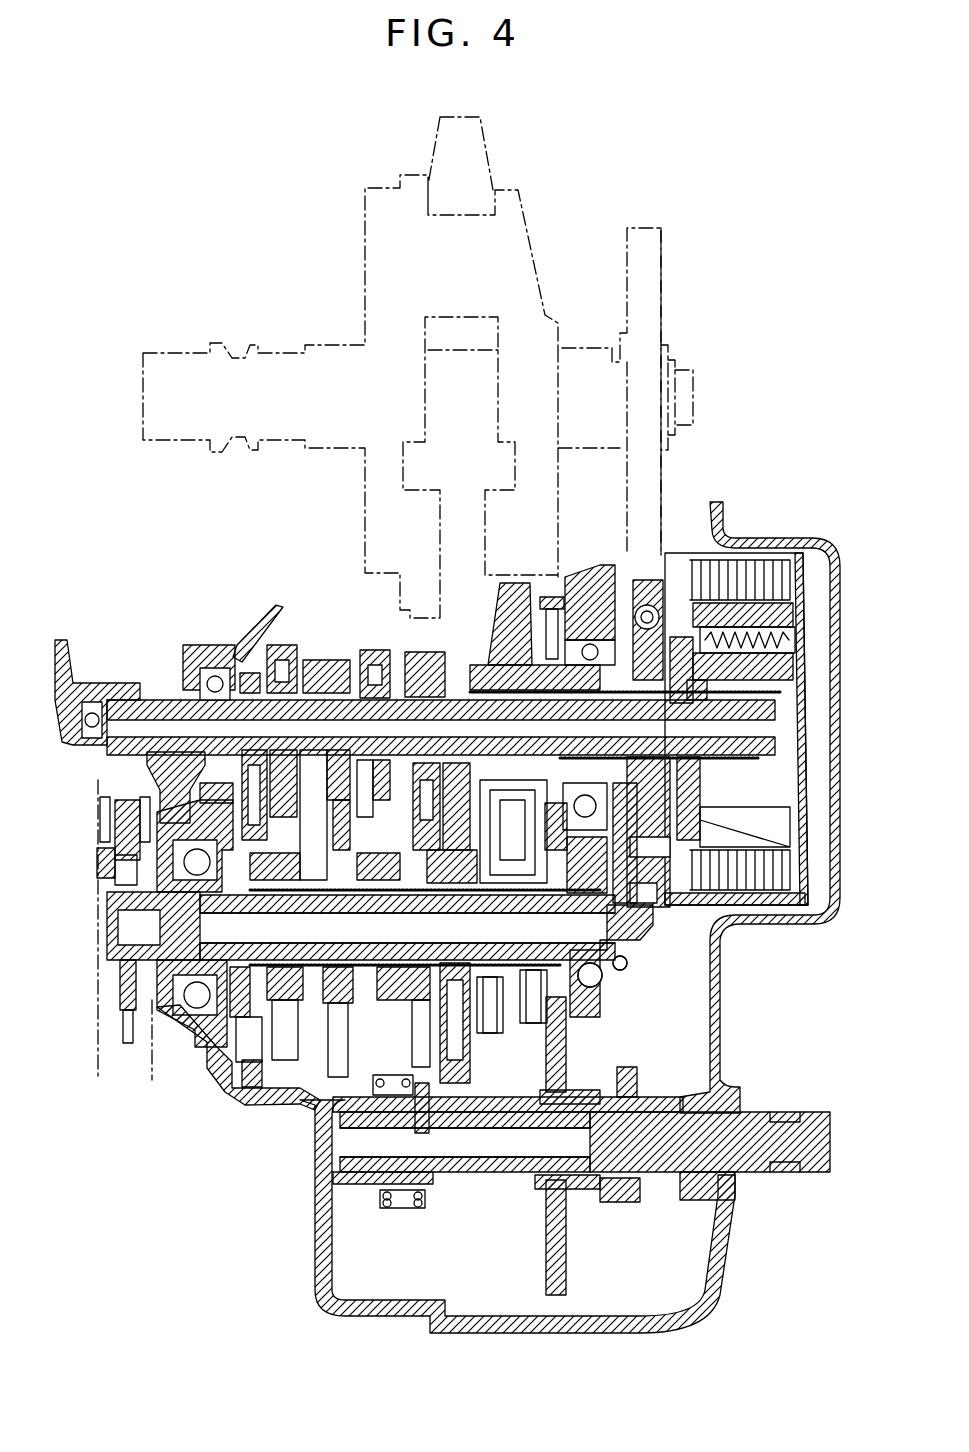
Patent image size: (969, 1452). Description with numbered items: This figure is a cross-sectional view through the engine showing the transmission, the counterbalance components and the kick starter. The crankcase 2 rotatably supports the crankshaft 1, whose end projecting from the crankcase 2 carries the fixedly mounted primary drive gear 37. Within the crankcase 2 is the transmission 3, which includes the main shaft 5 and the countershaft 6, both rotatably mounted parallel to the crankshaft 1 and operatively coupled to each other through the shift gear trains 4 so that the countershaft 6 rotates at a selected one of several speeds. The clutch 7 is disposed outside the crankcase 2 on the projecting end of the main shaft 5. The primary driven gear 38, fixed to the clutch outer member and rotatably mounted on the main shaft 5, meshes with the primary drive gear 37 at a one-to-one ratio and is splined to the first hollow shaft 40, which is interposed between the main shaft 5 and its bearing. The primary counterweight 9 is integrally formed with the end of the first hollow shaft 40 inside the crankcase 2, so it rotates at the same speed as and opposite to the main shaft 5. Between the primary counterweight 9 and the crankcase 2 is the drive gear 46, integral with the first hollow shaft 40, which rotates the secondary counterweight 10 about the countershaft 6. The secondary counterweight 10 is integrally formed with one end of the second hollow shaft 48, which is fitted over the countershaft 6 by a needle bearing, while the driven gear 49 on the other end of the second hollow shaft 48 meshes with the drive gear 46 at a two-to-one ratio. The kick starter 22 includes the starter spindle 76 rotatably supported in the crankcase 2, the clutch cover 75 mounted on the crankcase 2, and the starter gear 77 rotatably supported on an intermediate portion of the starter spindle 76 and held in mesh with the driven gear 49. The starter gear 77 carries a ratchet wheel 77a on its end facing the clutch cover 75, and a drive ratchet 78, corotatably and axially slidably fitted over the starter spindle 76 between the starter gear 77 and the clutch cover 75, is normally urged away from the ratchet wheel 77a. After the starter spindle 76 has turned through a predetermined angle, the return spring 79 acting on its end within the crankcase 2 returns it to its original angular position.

The crankshaft 1 is at (320, 335).
The primary drive gear 37 is at (667, 292).
The clutch 7 is at (805, 575).
The clutch cover 75 is at (842, 673).
The main shaft 5 is at (140, 752).
The shift gear trains 4 is at (339, 652).
The primary counterweight 9 is at (500, 600).
The first hollow shaft 40 is at (497, 667).
The drive gear 46 is at (552, 592).
The secondary counterweight 10 is at (507, 835).
The primary driven gear 38 is at (650, 910).
The transmission 3 is at (93, 906).
The countershaft 6 is at (100, 952).
The second hollow shaft 48 is at (507, 1017).
The driven gear 49 is at (537, 985).
The starter gear 77 is at (575, 1055).
The ratchet wheel 77a is at (577, 1190).
The drive ratchet 78 is at (633, 1197).
The starter spindle 76 is at (747, 1112).
The return spring 79 is at (423, 1210).
The kick starter 22 is at (694, 1207).
The crankcase 2 is at (638, 1337).